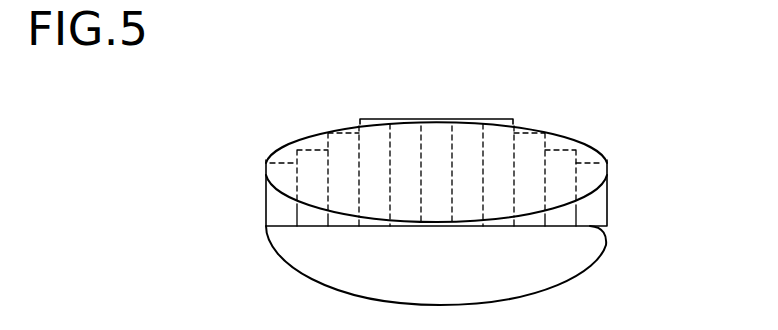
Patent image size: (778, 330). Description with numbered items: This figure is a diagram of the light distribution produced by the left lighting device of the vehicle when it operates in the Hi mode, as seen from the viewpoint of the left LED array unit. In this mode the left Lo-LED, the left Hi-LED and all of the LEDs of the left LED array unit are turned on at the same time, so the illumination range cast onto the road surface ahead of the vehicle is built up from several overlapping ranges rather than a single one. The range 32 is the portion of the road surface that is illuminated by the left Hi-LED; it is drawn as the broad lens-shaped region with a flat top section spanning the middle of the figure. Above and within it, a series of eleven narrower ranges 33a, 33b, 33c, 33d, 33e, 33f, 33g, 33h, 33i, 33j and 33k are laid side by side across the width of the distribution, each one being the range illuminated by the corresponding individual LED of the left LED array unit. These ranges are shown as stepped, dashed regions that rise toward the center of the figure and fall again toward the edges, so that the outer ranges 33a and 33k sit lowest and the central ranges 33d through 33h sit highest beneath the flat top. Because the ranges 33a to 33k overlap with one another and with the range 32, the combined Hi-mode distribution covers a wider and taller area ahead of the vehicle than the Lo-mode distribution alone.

The range 32 is at (546, 131).
The range 33a is at (280, 172).
The range 33b is at (308, 156).
The range 33c is at (340, 142).
The range 33d is at (372, 130).
The range 33e is at (403, 133).
The range 33f is at (438, 133).
The range 33g is at (465, 133).
The range 33h is at (497, 133).
The range 33i is at (530, 137).
The range 33j is at (560, 160).
The range 33k is at (592, 168).